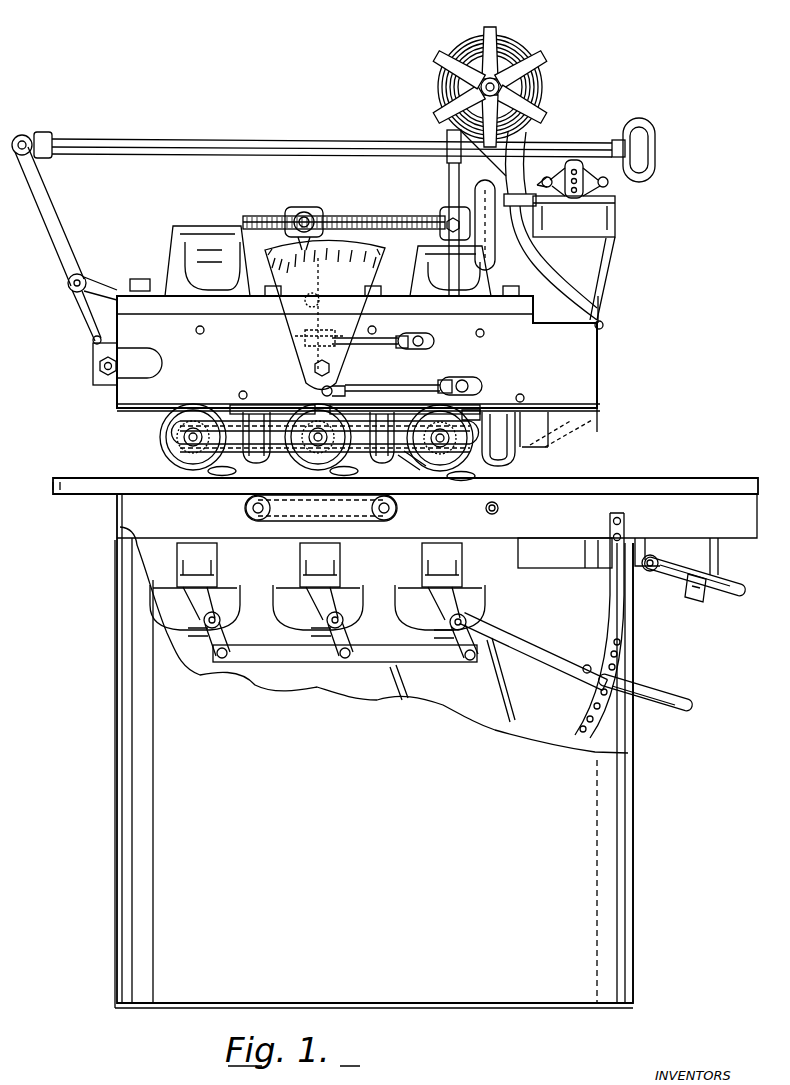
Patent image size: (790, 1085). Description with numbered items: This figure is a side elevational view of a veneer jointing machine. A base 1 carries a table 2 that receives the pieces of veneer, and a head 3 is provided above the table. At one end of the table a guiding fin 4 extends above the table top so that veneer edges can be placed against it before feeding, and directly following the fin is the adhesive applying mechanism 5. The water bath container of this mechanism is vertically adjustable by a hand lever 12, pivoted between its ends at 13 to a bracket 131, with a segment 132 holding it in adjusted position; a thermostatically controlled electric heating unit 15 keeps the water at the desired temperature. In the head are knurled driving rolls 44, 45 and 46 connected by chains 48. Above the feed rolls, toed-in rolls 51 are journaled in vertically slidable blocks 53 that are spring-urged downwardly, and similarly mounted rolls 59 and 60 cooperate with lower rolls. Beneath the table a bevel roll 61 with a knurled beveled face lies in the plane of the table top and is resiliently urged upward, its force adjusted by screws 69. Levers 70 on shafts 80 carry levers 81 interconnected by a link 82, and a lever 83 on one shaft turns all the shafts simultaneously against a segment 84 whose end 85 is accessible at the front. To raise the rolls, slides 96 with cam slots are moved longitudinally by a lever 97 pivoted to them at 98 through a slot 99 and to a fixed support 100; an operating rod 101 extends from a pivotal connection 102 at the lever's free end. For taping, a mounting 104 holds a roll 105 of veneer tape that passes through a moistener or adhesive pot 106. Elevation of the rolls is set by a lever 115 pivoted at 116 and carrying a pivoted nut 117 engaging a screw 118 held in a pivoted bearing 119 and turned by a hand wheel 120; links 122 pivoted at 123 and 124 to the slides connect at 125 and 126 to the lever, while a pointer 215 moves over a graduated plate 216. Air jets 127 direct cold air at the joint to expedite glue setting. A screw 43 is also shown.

The base 1 is at (136, 515).
The table 2 is at (97, 482).
The head 3 is at (586, 353).
The guiding fin 4 is at (678, 480).
The adhesive applying mechanism 5 is at (595, 568).
The hand lever 12 is at (675, 574).
The pivot 13 is at (652, 556).
The thermostatically controlled electric heating unit 15 is at (553, 566).
The screw 43 is at (494, 514).
The knurled driving roll 44 is at (161, 435).
The knurled driving roll 45 is at (302, 422).
The knurled driving roll 46 is at (470, 420).
The chains 48 is at (360, 425).
The toed-in rolls 51 is at (498, 464).
The blocks 53 is at (511, 430).
The roll 59 is at (410, 470).
The roll 60 is at (256, 470).
The bevel roll 61 is at (197, 481).
The screws 69 is at (197, 636).
The levers 70 is at (203, 650).
The shafts 80 is at (221, 619).
The levers 81 is at (226, 636).
The link 82 is at (268, 663).
The lever 83 is at (556, 650).
The segment 84 is at (626, 650).
The end 85 is at (662, 702).
The slides 96 is at (107, 383).
The lever 97 is at (80, 302).
The pivot 98 is at (99, 366).
The slot 99 is at (94, 340).
The fixed support 100 is at (85, 277).
The operating rod 101 is at (203, 156).
The pivotal connection 102 is at (42, 132).
The mounting 104 is at (524, 70).
The roll of veneer tape 105 is at (512, 57).
The moistener or adhesive pot 106 is at (603, 218).
The lever 115 is at (325, 314).
The pivot 116 is at (313, 364).
The pivoted nut 117 is at (305, 207).
The screw 118 is at (356, 216).
The pivoted bearing 119 is at (448, 214).
The hand wheel 120 is at (494, 247).
The links 122 is at (394, 334).
The pivot 123 is at (426, 341).
The pivot 124 is at (463, 383).
The pivot 125 is at (300, 336).
The pivot 126 is at (322, 390).
The air jets 127 is at (296, 460).
The bracket 131 is at (661, 557).
The segment 132 is at (701, 600).
The pointer 215 is at (293, 239).
The graduated plate 216 is at (372, 256).